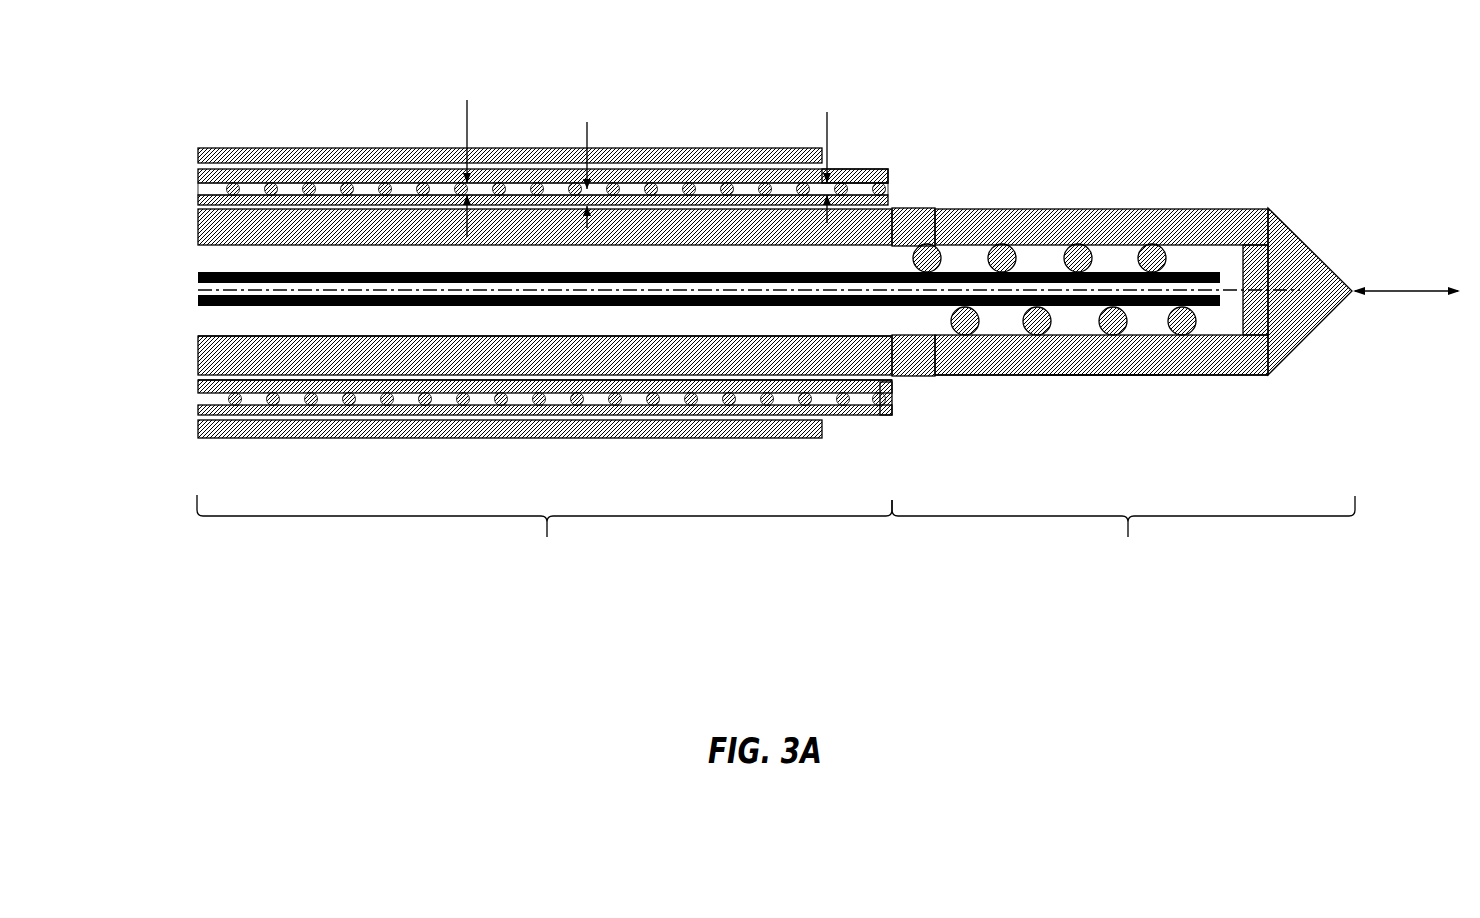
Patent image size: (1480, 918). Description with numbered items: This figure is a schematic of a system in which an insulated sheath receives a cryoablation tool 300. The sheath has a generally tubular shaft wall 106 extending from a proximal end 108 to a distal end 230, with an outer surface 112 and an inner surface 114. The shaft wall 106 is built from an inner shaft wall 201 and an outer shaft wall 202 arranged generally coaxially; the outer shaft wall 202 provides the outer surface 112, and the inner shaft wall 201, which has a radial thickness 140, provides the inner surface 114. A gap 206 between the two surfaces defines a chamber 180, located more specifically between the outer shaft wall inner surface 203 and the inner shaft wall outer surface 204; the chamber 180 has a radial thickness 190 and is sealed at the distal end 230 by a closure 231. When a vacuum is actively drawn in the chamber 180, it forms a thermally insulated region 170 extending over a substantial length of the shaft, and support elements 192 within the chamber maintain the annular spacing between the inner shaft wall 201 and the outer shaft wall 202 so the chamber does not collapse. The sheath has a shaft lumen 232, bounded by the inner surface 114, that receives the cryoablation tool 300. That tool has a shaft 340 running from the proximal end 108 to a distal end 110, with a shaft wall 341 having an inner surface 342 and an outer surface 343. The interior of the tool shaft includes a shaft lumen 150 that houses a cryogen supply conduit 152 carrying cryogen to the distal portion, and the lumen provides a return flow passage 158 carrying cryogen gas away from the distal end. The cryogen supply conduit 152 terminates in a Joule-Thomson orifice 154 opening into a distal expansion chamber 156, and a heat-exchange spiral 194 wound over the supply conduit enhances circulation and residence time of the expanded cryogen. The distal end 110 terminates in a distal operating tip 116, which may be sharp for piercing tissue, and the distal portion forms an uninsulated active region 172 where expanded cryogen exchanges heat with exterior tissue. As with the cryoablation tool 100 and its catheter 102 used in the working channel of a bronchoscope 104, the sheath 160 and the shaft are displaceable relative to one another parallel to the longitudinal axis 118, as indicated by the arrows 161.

The cryoablation tool 100 is at (948, 138).
The catheter 102 is at (930, 202).
The bronchoscope 104 is at (247, 158).
The shaft wall 106 is at (353, 402).
The proximal end 108 is at (183, 142).
The distal end 110 is at (1272, 168).
The outer surface 112 is at (482, 413).
The inner surface 114 is at (553, 383).
The distal operating tip 116 is at (1163, 373).
The longitudinal axis 118 is at (1287, 290).
The radial thickness 140 is at (587, 122).
The shaft lumen 150 is at (252, 260).
The cryogen supply conduit 152 is at (340, 305).
The Joule-Thomson orifice 154 is at (1217, 303).
The distal expansion chamber 156 is at (1235, 307).
The return flow passage 158 is at (765, 313).
The sheath 160 is at (378, 177).
The arrows 161 is at (1430, 291).
The thermally insulated region 170 is at (544, 533).
The active region 172 is at (1123, 534).
The chamber 180 is at (357, 188).
The radial thickness 190 is at (827, 112).
The support elements 192 is at (723, 190).
The heat-exchange spiral 194 is at (1153, 255).
The inner shaft wall 201 is at (200, 388).
The outer shaft wall 202 is at (200, 410).
The outer shaft wall inner surface 203 is at (198, 192).
The inner shaft wall outer surface 204 is at (198, 180).
The gap 206 is at (467, 112).
The distal end 230 is at (883, 158).
The closure 231 is at (892, 398).
The shaft lumen 232 is at (890, 200).
The cryoablation tool 300 is at (1095, 202).
The shaft 340 is at (1038, 380).
The shaft wall 341 is at (607, 350).
The inner surface 342 is at (673, 337).
The outer surface 343 is at (1097, 376).